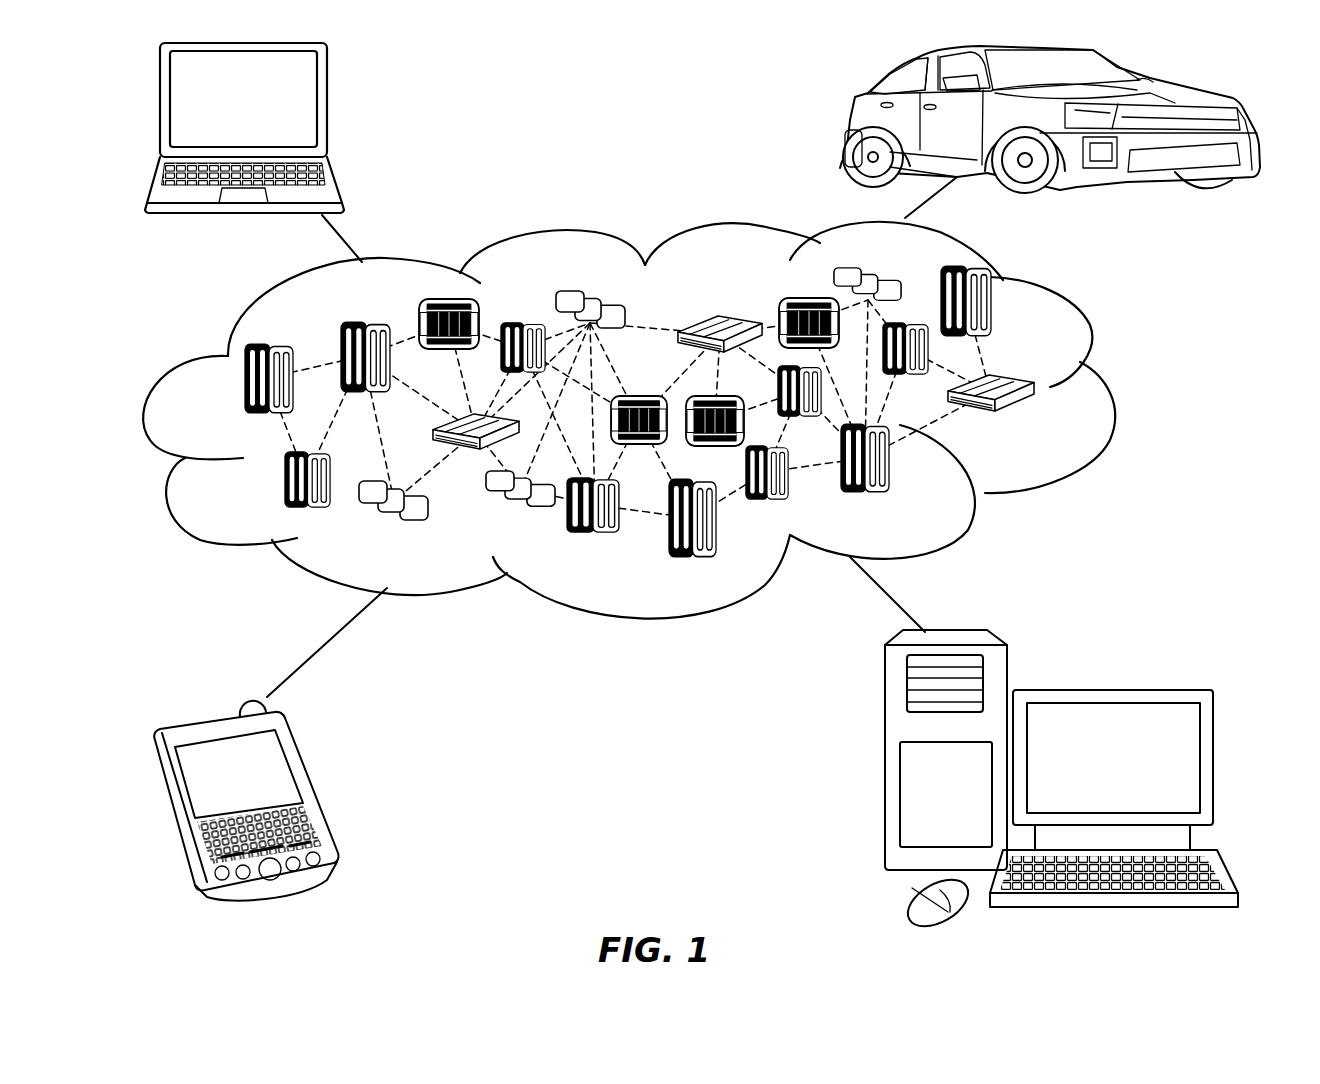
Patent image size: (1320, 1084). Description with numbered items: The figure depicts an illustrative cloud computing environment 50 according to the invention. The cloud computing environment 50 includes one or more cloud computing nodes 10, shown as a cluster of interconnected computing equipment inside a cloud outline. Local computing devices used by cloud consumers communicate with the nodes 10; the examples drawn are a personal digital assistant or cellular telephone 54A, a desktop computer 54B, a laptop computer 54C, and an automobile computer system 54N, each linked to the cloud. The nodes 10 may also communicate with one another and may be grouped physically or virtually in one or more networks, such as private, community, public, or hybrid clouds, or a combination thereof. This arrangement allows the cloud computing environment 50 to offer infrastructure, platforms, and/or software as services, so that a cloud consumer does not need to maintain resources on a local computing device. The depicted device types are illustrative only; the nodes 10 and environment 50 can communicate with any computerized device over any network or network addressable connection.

The cloud computing nodes 10 is at (705, 411).
The cloud computing environment 50 is at (1112, 392).
The personal digital assistant (PDA) or cellular telephone 54A is at (313, 790).
The desktop computer 54B is at (1110, 689).
The laptop computer 54C is at (330, 110).
The automobile computer system 54N is at (848, 122).